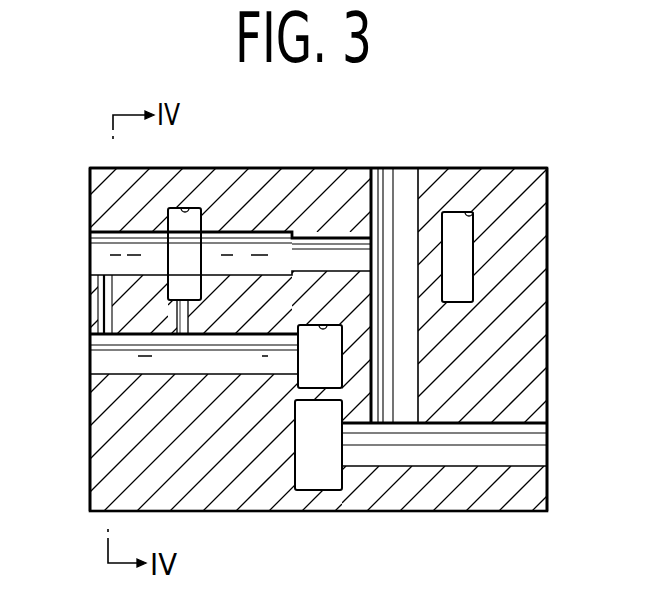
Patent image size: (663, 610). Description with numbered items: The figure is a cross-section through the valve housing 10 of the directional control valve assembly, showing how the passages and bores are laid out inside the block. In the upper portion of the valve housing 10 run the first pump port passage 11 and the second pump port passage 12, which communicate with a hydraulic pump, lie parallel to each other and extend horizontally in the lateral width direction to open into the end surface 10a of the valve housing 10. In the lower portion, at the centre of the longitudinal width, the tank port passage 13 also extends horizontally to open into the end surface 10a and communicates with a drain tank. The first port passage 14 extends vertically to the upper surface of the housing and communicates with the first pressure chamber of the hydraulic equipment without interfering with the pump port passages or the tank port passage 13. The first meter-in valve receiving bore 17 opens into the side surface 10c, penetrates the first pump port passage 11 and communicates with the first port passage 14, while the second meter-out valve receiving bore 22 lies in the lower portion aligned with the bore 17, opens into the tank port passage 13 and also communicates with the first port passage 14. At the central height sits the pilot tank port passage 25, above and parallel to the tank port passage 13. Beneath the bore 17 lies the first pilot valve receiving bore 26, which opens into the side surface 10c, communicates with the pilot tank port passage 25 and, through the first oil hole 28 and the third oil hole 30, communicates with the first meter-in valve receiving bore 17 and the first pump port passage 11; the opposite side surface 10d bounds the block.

The valve housing 10 is at (529, 202).
The end surface 10a is at (532, 168).
The side surface 10c is at (90, 432).
The right side surface of body 10d is at (548, 342).
The first pump port passage 11 is at (190, 207).
The second pump port passage 12 is at (470, 212).
The tank port passage 13 is at (308, 475).
The first port passage 14 is at (417, 178).
The first meter-in valve receiving bore 17 is at (279, 232).
The second meter-out valve receiving bore 22 is at (457, 466).
The pilot tank port passage 25 is at (318, 328).
The first pilot valve receiving bore 26 is at (122, 373).
The first oil hole 28 is at (107, 295).
The third oil hole 30 is at (203, 356).